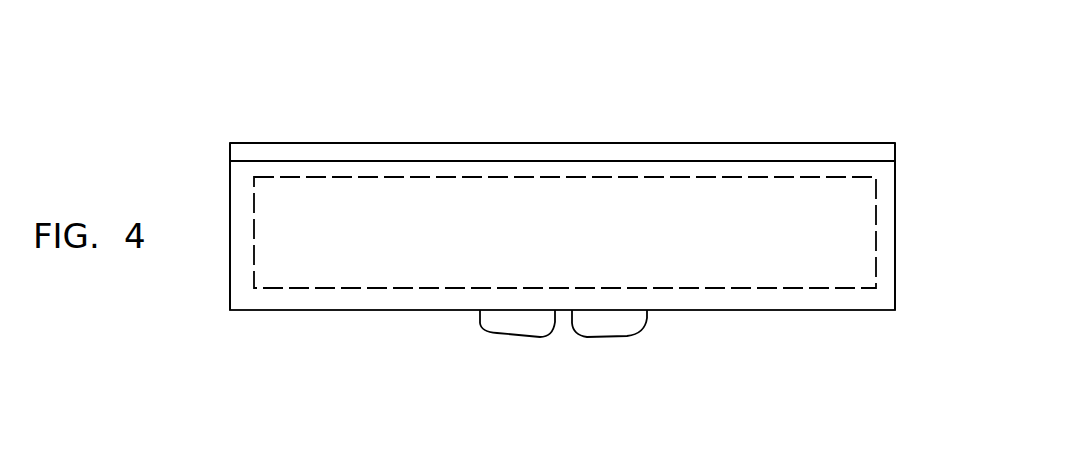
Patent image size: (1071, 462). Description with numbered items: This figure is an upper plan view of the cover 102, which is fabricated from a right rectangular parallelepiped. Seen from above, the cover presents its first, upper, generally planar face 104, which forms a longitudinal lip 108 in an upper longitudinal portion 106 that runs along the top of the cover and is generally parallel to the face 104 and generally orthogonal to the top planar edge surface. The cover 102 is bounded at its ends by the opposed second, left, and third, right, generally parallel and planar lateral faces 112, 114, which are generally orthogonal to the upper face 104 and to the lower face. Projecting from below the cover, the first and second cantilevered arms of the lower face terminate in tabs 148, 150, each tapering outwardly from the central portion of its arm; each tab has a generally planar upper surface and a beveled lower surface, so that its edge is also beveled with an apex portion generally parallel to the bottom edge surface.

The cover 102 is at (442, 108).
The first (upper) face 104 is at (288, 215).
The upper longitudinal portion 106 is at (734, 163).
The longitudinal lip 108 is at (598, 148).
The second (left) lateral face 112 is at (229, 172).
The third (right) lateral face 114 is at (896, 177).
The tab 148 is at (500, 333).
The tab 150 is at (625, 335).